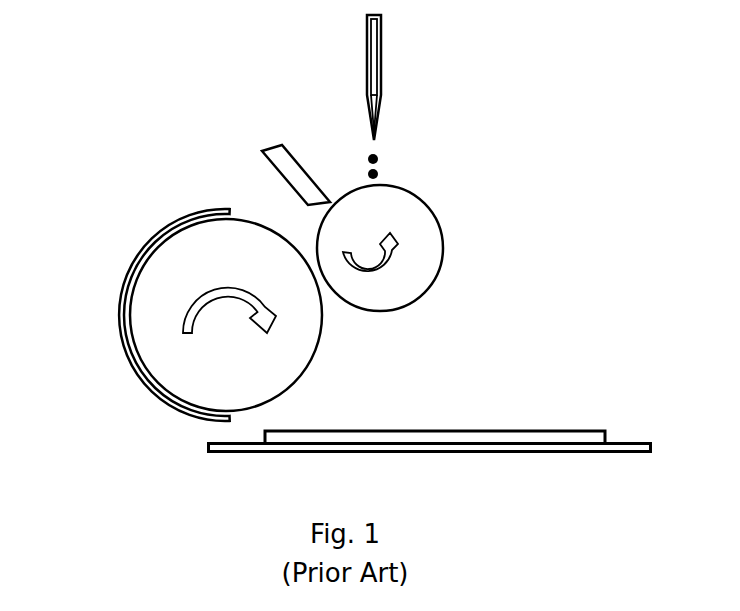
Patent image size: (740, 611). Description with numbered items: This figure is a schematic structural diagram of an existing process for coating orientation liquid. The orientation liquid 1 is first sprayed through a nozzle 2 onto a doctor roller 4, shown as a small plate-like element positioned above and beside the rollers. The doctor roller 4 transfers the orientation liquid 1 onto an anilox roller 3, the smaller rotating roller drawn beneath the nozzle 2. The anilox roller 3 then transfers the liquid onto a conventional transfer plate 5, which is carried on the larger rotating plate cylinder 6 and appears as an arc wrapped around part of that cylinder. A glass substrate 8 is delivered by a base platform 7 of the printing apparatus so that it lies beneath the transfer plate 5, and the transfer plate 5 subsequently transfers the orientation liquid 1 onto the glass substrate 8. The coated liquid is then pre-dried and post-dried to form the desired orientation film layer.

The orientation liquid 1 is at (379, 158).
The nozzle 2 is at (382, 73).
The anilox roller 3 is at (450, 250).
The doctor roller 4 is at (278, 163).
The transfer plate 5 is at (148, 388).
The plate cylinder 6 is at (162, 354).
The base platform 7 is at (620, 442).
The glass substrate 8 is at (456, 430).